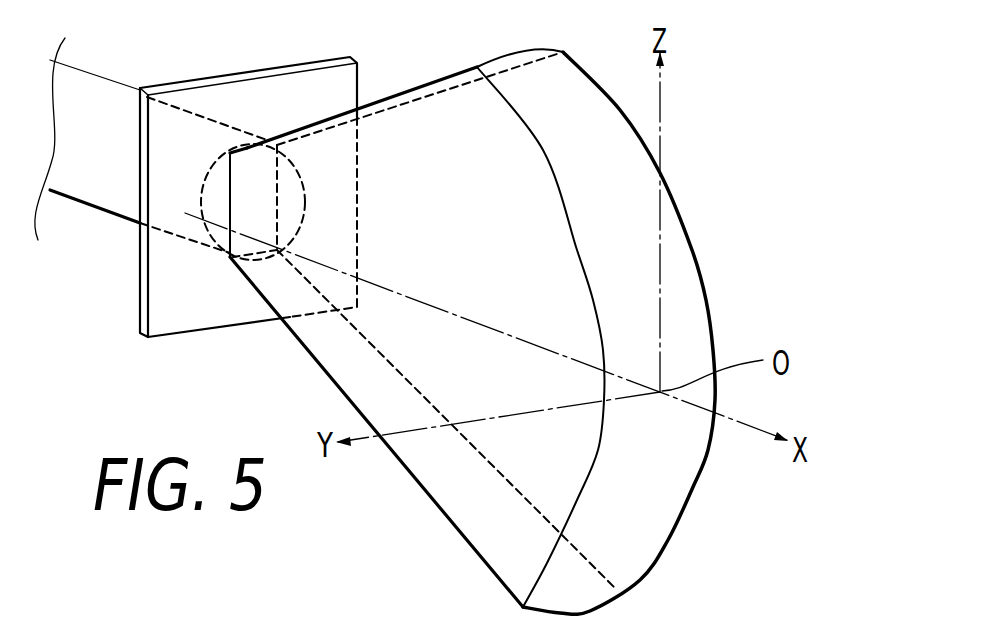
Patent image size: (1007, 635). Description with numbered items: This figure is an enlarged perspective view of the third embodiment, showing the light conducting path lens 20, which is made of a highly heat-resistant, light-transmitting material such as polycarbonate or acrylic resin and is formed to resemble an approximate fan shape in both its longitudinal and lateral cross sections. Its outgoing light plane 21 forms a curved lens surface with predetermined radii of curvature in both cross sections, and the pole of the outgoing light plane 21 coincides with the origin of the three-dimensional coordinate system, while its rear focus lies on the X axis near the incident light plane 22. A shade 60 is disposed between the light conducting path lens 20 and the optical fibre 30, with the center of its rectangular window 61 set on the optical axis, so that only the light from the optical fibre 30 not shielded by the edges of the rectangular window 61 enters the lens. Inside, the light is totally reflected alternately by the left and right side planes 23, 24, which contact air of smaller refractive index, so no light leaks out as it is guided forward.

The light conducting path lens 20 is at (450, 525).
The outgoing light plane 21 is at (670, 530).
The incident light plane 22 is at (257, 145).
The left side plane 23 is at (410, 450).
The right side plane 24 is at (421, 103).
The optical fibre 30 is at (95, 190).
The shade 60 is at (188, 325).
The rectangular window 61 is at (233, 258).